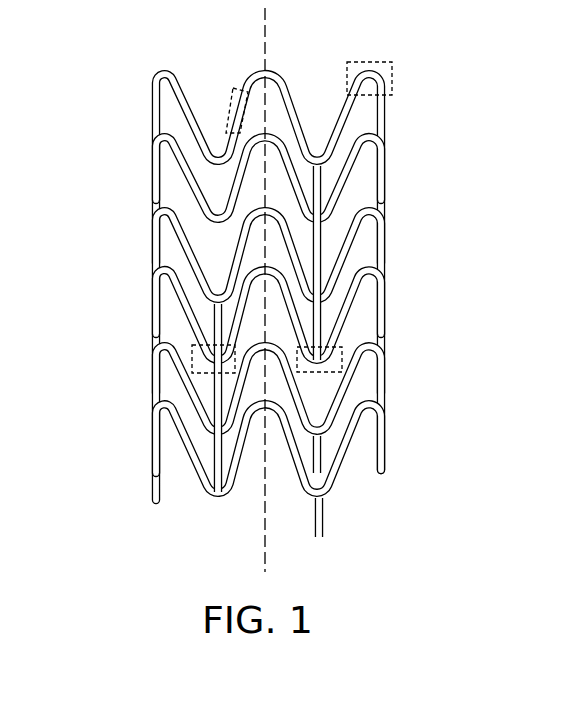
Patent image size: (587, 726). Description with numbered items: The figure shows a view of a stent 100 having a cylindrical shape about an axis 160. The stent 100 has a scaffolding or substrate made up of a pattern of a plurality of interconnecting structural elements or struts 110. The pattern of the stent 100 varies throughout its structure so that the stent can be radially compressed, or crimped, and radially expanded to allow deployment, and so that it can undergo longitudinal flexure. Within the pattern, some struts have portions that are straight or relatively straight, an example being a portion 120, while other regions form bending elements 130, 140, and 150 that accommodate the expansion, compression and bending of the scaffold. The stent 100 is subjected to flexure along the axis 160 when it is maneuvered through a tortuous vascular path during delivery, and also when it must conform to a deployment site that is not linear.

The stent 100 is at (275, 295).
The struts 110 is at (195, 400).
The portion 120 is at (233, 100).
The bending element 130 is at (372, 62).
The bending element 140 is at (216, 430).
The bending element 150 is at (330, 372).
The axis 160 is at (263, 33).